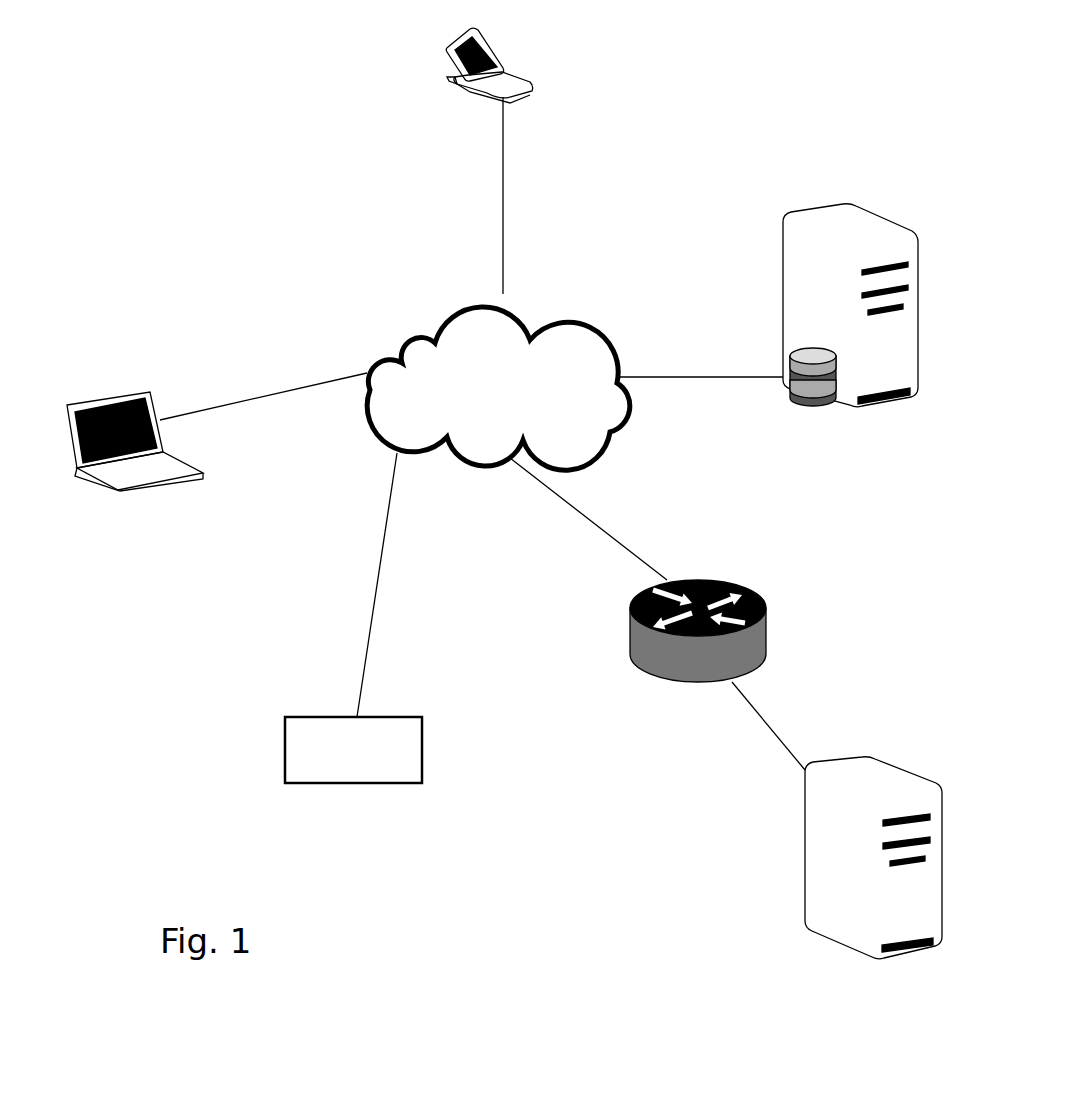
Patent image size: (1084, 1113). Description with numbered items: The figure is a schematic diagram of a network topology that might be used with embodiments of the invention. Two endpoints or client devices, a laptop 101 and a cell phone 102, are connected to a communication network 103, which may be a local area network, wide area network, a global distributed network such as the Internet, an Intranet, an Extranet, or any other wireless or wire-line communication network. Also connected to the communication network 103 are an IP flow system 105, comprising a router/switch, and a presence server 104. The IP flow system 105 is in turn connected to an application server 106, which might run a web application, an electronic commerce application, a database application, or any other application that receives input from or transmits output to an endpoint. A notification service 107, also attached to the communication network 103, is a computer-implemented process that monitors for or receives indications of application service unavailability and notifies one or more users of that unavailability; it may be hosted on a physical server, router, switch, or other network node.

The laptop 101 is at (93, 483).
The cell phone 102 is at (490, 45).
The communication network 103 is at (366, 410).
The presence server 104 is at (888, 400).
The IP flow system 105 is at (630, 657).
The application server 106 is at (872, 957).
The notification service 107 is at (387, 785).